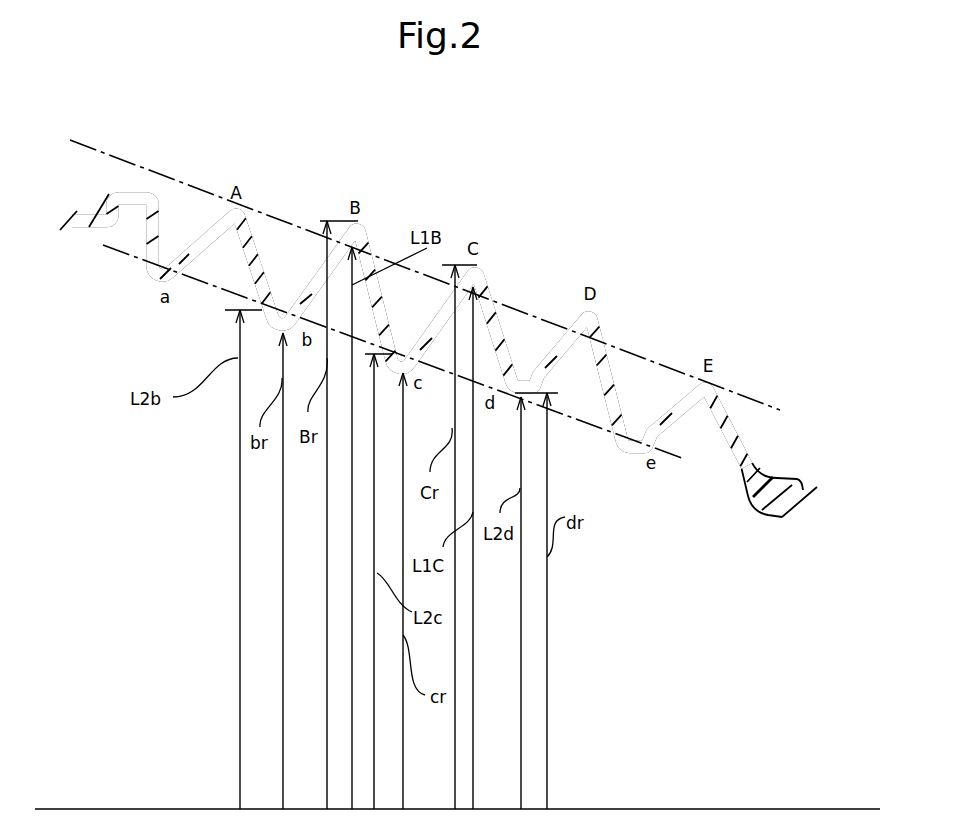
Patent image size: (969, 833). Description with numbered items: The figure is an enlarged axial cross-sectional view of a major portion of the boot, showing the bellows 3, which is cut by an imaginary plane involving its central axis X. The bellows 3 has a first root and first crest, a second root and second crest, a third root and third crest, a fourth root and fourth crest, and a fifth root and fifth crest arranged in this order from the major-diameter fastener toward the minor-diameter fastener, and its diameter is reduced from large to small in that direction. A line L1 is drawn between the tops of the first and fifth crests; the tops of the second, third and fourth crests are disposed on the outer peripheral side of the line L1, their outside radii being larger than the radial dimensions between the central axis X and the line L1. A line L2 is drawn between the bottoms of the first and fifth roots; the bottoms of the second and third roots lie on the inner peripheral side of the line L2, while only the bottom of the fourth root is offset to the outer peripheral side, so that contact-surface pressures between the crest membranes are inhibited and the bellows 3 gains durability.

The bellows 3 is at (661, 308).
The line L1 is at (444, 282).
The line L2 is at (378, 351).
The central axis X is at (80, 809).